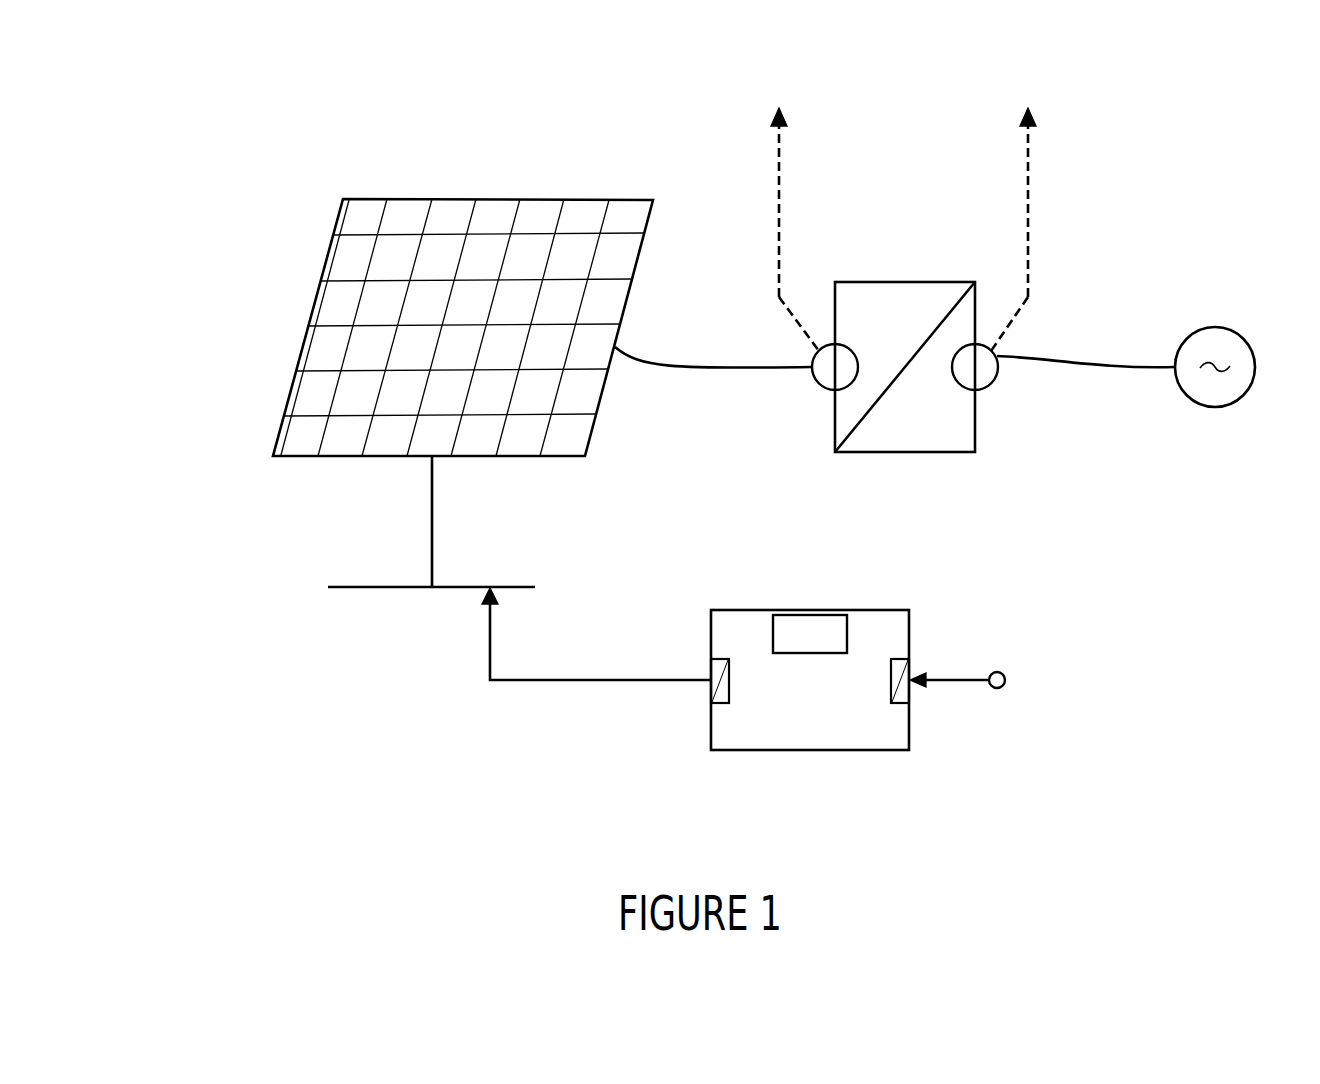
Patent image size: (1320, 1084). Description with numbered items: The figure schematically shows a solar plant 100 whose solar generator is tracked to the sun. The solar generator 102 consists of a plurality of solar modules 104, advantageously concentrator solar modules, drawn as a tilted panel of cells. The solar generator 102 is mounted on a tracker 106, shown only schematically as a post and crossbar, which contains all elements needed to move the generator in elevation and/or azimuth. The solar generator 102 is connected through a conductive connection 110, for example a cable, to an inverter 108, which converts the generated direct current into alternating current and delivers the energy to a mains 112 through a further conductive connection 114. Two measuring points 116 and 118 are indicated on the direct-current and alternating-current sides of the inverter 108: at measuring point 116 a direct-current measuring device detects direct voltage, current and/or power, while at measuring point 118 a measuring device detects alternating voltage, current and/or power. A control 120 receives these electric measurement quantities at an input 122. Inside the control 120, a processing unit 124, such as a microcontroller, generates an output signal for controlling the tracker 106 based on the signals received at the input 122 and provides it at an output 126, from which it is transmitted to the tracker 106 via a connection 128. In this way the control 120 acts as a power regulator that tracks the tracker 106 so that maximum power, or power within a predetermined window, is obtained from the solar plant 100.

The solar plant 100 is at (213, 606).
The solar generator 102 is at (330, 257).
The solar modules 104 is at (363, 210).
The tracker 106 is at (383, 590).
The inverter 108 is at (900, 282).
The conductive connection 110 is at (698, 366).
The mains 112 is at (1215, 328).
The further conductive connection 114 is at (1110, 362).
The measuring point 116 is at (830, 390).
The measuring point 118 is at (983, 390).
The control 120 is at (810, 751).
The input 122 is at (903, 696).
The processing unit 124 is at (808, 610).
The output 126 is at (718, 696).
The connection 128 is at (500, 683).